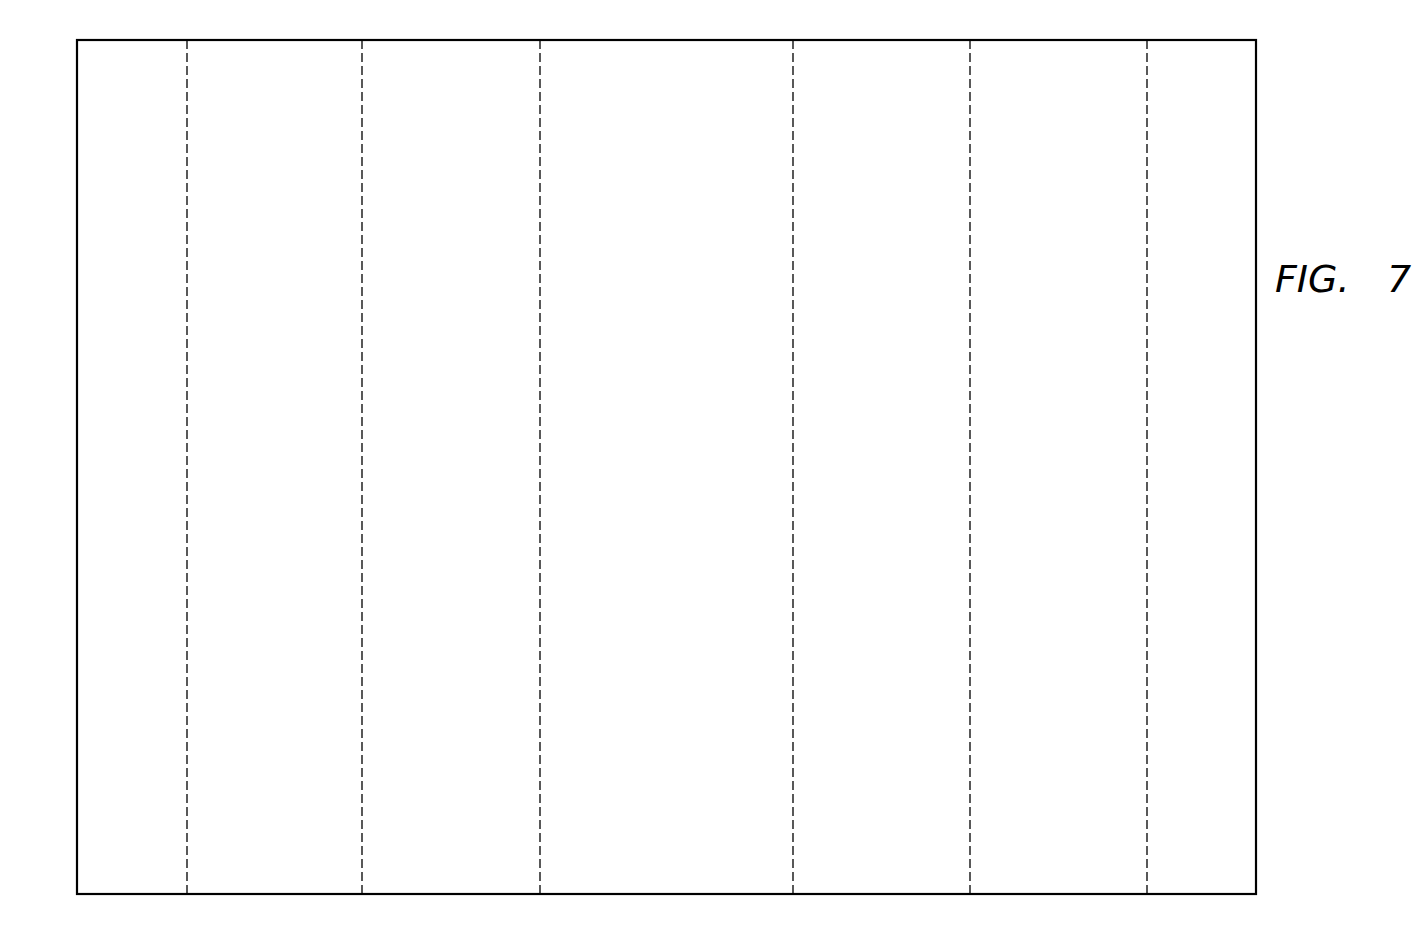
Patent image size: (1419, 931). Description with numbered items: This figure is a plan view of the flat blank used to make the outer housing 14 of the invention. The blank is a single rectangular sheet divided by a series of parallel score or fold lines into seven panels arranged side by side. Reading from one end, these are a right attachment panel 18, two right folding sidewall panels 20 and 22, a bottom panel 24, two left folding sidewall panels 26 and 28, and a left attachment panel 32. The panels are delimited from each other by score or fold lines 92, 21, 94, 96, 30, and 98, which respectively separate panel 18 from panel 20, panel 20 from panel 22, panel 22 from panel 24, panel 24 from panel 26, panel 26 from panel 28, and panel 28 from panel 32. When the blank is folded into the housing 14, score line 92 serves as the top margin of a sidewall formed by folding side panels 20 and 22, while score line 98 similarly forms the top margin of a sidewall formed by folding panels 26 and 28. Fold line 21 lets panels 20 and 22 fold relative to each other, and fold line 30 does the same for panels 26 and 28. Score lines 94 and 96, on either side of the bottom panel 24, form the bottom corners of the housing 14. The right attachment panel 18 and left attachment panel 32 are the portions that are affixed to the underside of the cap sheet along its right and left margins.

The housing 14 is at (1291, 131).
The right attachment panel 18 is at (146, 478).
The right folding sidewall panel 20 is at (288, 478).
The right folding sidewall panel 22 is at (465, 478).
The bottom panel 24 is at (680, 478).
The left folding sidewall panel 26 is at (895, 478).
The left folding sidewall panel 28 is at (1072, 478).
The left attachment panel 32 is at (1215, 478).
The score or fold line 92 is at (187, 624).
The score or fold line 21 is at (362, 624).
The score or fold line 94 is at (540, 624).
The score or fold line 96 is at (793, 624).
The score or fold line 30 is at (970, 624).
The score or fold line 98 is at (1147, 624).